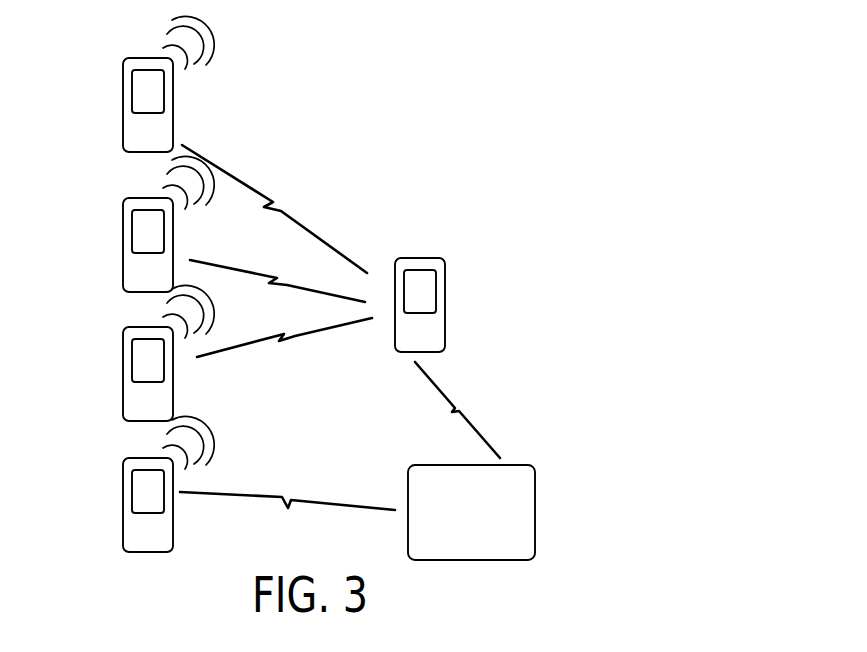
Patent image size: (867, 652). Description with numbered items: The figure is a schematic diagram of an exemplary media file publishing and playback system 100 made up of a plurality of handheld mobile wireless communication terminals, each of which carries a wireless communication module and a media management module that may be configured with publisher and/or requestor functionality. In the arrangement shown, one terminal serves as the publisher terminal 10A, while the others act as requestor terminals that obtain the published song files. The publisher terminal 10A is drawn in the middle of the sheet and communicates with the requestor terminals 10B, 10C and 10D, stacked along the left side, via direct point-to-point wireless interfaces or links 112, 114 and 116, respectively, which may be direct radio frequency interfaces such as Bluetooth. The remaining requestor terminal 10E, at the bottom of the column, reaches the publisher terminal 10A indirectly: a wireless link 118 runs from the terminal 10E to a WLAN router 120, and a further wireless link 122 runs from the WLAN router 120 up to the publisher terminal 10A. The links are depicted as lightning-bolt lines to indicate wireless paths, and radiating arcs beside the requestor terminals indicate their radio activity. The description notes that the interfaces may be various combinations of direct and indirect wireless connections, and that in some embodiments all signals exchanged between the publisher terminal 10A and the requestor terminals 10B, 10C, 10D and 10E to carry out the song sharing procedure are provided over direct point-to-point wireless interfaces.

The media file playback system 100 is at (393, 104).
The publisher terminal 10A is at (405, 258).
The requestor terminal 10B is at (131, 58).
The requestor terminal 10C is at (131, 198).
The requestor terminal 10D is at (131, 327).
The requestor terminal 10E is at (131, 458).
The wireless link 112 is at (271, 196).
The wireless link 114 is at (294, 284).
The wireless link 116 is at (286, 333).
The wireless link 118 is at (326, 500).
The WLAN router 120 is at (495, 527).
The wireless link 122 is at (456, 405).